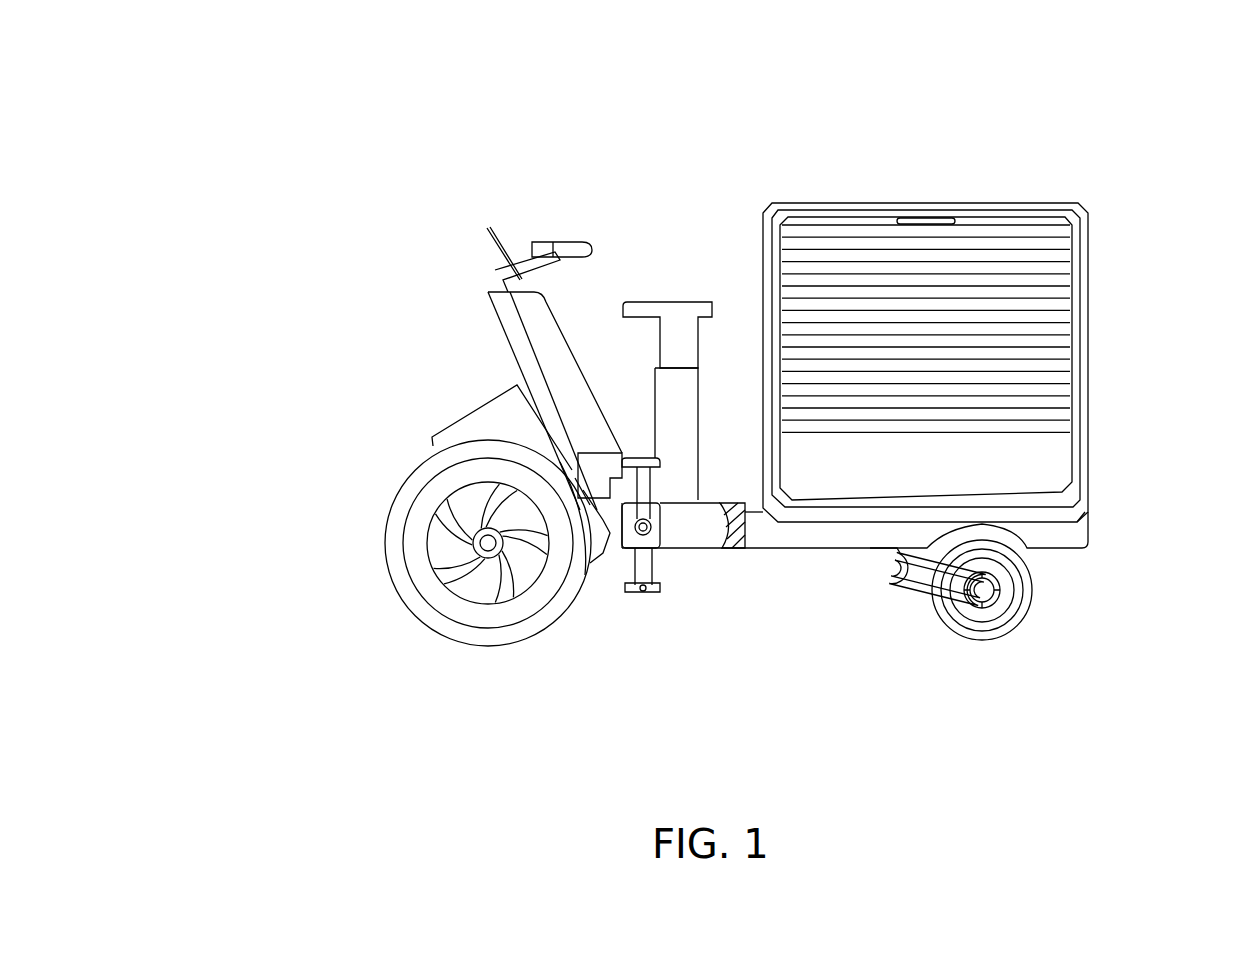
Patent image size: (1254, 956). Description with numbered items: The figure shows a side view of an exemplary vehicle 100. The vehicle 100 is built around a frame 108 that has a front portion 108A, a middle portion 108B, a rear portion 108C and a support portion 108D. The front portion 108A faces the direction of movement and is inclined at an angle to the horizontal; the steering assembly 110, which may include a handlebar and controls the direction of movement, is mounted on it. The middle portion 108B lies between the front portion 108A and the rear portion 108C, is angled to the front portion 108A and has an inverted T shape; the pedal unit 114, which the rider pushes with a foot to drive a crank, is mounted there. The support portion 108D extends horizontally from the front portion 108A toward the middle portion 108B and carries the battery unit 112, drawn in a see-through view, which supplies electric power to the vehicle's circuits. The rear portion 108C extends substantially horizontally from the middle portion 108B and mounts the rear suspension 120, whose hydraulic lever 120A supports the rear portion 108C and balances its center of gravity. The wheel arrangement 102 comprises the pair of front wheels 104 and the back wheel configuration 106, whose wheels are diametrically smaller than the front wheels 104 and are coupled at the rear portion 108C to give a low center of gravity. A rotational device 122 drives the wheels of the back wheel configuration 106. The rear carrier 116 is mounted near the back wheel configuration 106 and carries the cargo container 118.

The vehicle 100 is at (243, 115).
The wheel arrangement 102 is at (907, 625).
The pair of front wheels 104 is at (372, 530).
The back wheel configuration 106 is at (1033, 607).
The frame 108 is at (548, 372).
The front portion 108A is at (497, 313).
The middle portion 108B is at (620, 532).
The rear portion 108C is at (693, 522).
The support portion 108D is at (603, 563).
The steering assembly 110 is at (560, 238).
The battery unit 112 is at (577, 463).
The pedal unit 114 is at (652, 462).
The rear carrier 116 is at (1093, 532).
The cargo container 118 is at (1093, 352).
The rear suspension 120 is at (947, 583).
The hydraulic lever 120A is at (870, 548).
The rotational device 122 is at (740, 513).